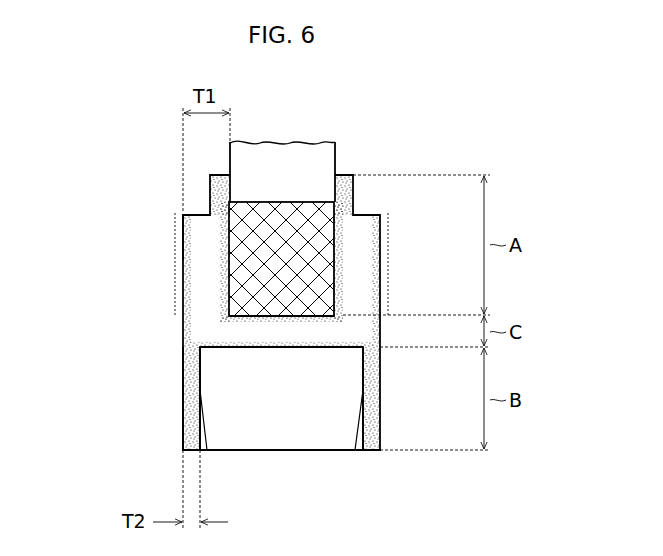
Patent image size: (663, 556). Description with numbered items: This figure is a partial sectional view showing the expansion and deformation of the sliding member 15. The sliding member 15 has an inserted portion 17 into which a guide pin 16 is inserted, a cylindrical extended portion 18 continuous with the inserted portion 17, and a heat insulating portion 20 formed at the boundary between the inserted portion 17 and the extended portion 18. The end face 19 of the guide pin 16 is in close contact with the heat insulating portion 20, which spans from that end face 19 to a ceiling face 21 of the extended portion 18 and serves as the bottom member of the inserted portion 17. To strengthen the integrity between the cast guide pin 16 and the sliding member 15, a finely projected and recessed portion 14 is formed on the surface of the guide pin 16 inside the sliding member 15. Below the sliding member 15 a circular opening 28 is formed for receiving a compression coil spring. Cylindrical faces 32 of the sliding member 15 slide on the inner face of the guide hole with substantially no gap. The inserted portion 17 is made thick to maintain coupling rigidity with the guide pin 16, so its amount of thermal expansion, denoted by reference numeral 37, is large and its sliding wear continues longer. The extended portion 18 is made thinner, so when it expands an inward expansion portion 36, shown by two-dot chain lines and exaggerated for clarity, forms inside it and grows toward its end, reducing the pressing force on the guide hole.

The projected and recessed portion 14 is at (317, 234).
The sliding member 15 is at (181, 238).
The guide pin 16 is at (336, 159).
The inserted portion 17 is at (357, 257).
The extended portion 18 is at (183, 425).
The end face 19 is at (258, 320).
The heat insulating portion 20 is at (303, 333).
The ceiling face 21 is at (330, 350).
The opening 28 is at (227, 380).
The cylindrical face 32 is at (175, 308).
The inward expansion portion 36 is at (207, 440).
The expansion of inserted portion 37 is at (175, 283).